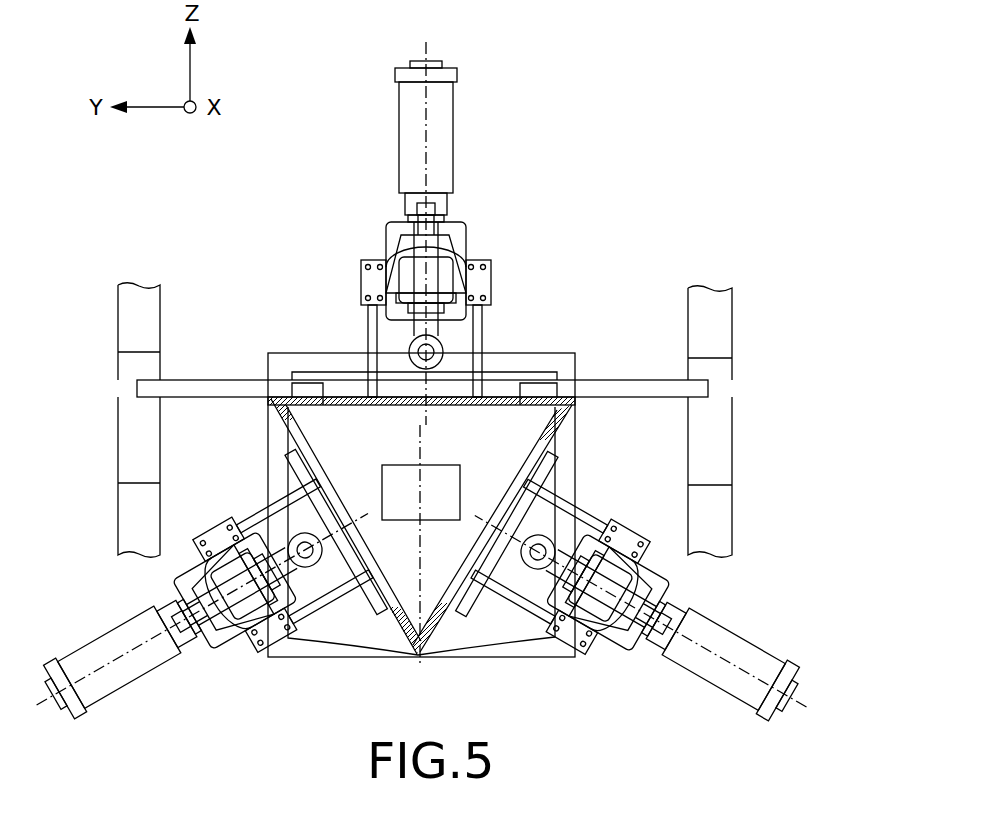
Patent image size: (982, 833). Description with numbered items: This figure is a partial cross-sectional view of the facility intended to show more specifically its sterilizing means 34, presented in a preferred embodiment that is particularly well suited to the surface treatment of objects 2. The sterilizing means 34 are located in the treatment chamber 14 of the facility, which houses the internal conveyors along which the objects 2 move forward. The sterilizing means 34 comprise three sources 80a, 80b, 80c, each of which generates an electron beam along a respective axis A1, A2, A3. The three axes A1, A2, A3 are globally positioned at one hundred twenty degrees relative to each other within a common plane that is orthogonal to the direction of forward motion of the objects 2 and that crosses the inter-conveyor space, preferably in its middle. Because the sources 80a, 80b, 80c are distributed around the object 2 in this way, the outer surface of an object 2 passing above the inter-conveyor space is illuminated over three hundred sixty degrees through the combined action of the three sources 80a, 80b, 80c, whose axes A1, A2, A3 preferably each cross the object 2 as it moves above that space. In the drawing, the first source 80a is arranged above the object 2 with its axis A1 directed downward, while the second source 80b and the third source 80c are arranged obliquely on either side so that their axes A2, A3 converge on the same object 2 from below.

The sterilizing means 34 is at (297, 188).
The object 2 is at (410, 478).
The treatment chamber 14 is at (522, 434).
The first source 80a is at (448, 122).
The second source 80b is at (735, 647).
The third source 80c is at (108, 673).
The axis A1 is at (430, 52).
The axis A2 is at (798, 703).
The axis A3 is at (30, 703).